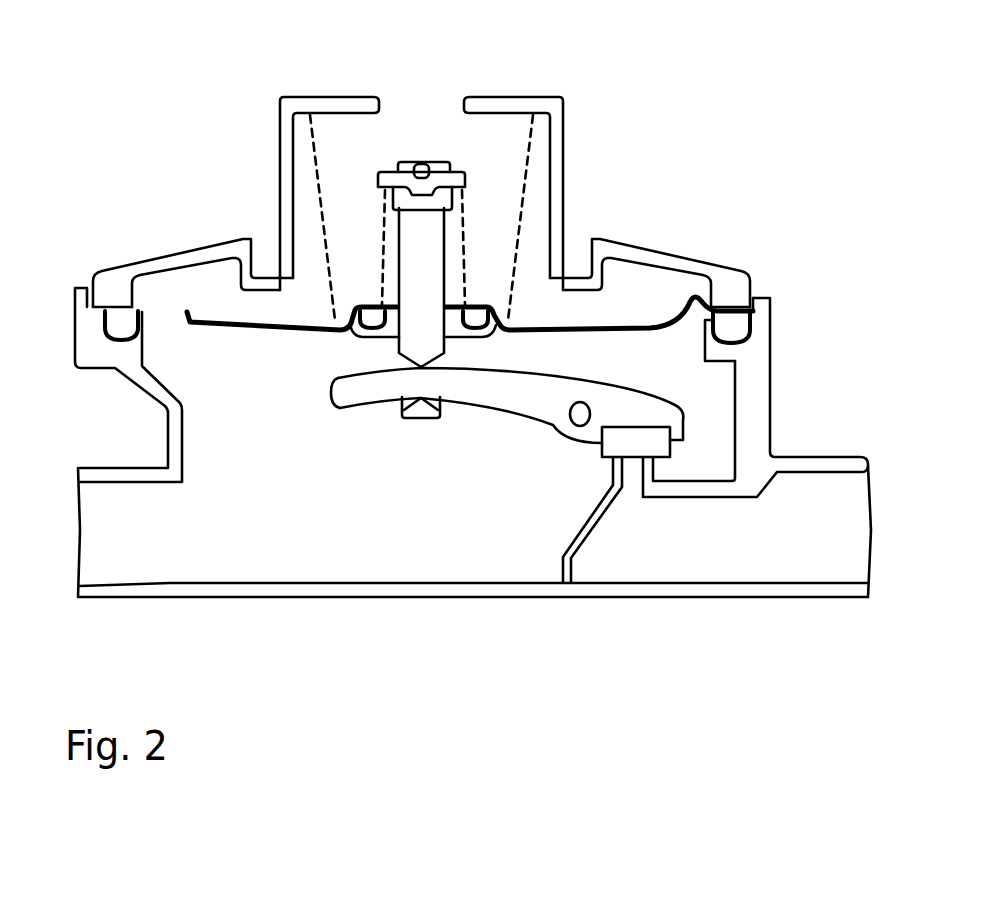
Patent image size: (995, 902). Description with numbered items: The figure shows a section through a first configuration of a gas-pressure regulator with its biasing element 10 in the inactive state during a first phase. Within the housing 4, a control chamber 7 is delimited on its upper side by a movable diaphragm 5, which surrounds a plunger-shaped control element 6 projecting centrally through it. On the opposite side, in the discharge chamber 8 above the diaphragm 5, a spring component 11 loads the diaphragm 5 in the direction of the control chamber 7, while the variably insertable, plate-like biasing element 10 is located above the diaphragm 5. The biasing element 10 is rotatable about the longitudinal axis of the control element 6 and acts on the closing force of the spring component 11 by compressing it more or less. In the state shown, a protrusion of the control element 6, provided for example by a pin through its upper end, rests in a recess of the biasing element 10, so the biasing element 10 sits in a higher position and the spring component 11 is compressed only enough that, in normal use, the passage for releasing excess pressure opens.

The housing 4 is at (683, 260).
The diaphragm 5 is at (207, 322).
The control element 6 is at (412, 265).
The control chamber 7 is at (385, 542).
The discharge chamber 8 is at (378, 163).
The biasing element 10 is at (465, 183).
The spring component 11 is at (465, 272).